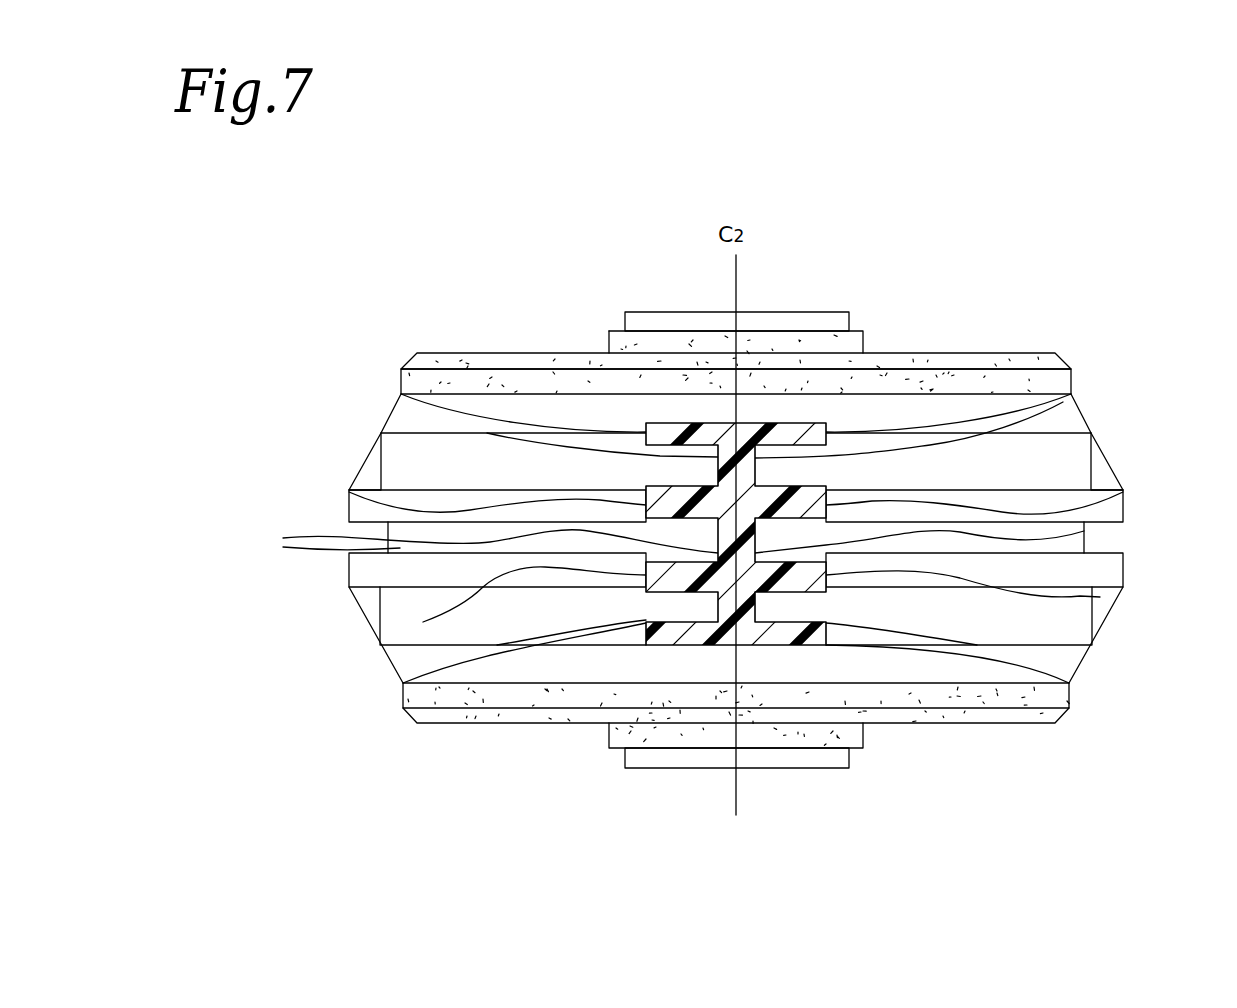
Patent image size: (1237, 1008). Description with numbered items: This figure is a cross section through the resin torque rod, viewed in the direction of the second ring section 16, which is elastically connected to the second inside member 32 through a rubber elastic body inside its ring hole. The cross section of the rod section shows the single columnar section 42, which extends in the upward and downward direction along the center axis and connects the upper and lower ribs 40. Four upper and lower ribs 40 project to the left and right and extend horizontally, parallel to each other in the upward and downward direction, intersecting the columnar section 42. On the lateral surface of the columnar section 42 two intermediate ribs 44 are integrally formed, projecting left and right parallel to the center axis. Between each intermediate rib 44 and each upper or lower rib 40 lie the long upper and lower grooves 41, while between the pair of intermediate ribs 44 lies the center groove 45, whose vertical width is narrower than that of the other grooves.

The second ring section 16 is at (893, 349).
The second inside member 32 is at (767, 318).
The upper and lower ribs 40 is at (535, 433).
The upper and lower grooves 41 is at (1023, 436).
The columnar section 42 is at (717, 460).
The intermediate ribs 44 is at (410, 503).
The center groove 45 is at (1190, 540).